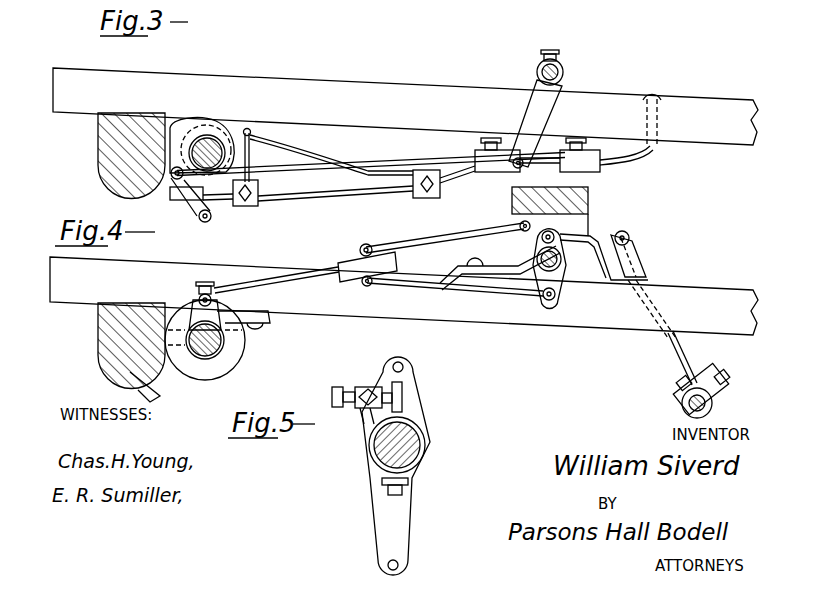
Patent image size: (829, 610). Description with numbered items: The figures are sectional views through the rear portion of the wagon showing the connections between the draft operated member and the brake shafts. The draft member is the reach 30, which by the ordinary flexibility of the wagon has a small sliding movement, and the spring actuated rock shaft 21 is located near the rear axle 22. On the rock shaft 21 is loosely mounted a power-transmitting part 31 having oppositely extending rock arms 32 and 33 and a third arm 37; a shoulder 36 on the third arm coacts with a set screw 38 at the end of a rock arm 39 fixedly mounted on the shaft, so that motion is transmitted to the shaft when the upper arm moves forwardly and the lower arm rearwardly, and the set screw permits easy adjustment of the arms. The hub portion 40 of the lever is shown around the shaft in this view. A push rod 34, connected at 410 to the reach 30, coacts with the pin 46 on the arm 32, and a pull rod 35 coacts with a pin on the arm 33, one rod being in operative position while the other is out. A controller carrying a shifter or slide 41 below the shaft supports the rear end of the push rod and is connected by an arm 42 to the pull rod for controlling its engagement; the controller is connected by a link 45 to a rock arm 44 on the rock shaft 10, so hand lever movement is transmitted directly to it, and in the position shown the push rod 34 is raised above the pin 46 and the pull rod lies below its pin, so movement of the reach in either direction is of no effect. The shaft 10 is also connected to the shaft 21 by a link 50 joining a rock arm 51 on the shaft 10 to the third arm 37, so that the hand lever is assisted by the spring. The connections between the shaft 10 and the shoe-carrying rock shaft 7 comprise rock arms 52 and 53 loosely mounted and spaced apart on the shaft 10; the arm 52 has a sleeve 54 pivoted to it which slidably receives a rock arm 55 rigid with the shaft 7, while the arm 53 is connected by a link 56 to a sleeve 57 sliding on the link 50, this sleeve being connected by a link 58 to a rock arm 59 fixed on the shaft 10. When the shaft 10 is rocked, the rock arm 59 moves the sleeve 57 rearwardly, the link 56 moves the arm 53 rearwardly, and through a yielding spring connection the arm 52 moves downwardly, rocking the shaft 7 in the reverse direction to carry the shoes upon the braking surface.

In FIG. 4, the rock shaft 7 is at (716, 406).
In FIG. 3, the rock shaft 10 is at (563, 68).
In FIG. 4, the rock shaft 10 is at (556, 272).
In FIG. 3, the rock shaft 21 is at (222, 145).
In FIG. 4, the rock shaft 21 is at (224, 348).
In FIG. 5, the rock shaft 21 is at (420, 440).
In FIG. 3, the rear axle 22 is at (98, 144).
In FIG. 4, the rear axle 22 is at (98, 351).
In FIG. 3, the reach 30 is at (428, 97).
In FIG. 4, the reach 30 is at (236, 270).
In FIG. 4, the power-transmitting part 31 is at (213, 372).
In FIG. 5, the power-transmitting part 31 is at (415, 484).
In FIG. 3, the rock arm 32 is at (182, 204).
In FIG. 5, the rock arm 32 is at (400, 538).
In FIG. 3, the rock arm 33 is at (208, 120).
In FIG. 3, the push rod 34 is at (292, 201).
In FIG. 3, the pull rod 35 is at (258, 143).
In FIG. 5, the shoulder 36 is at (402, 393).
In FIG. 4, the third arm 37 is at (203, 312).
In FIG. 5, the third arm 37 is at (415, 390).
In FIG. 5, the set screw 38 is at (380, 386).
In FIG. 5, the rock arm 39 is at (364, 414).
In FIG. 3, the lever bar 40 is at (236, 156).
In FIG. 3, the shifter or slide 41 is at (245, 206).
In FIG. 3, the arm 42 is at (252, 137).
In FIG. 3, the rock arm 44 is at (547, 110).
In FIG. 3, the link 45 is at (434, 170).
In FIG. 3, the pin 46 is at (205, 222).
In FIG. 4, the link 50 is at (284, 290).
In FIG. 4, the rock arm 51 is at (562, 236).
In FIG. 4, the rock arm 52 is at (620, 232).
In FIG. 4, the rock arm 53 is at (515, 224).
In FIG. 4, the sleeve 54 is at (636, 262).
In FIG. 4, the rock arm 55 is at (698, 352).
In FIG. 4, the link 56 is at (434, 243).
In FIG. 4, the sleeve 57 is at (355, 258).
In FIG. 4, the link 58 is at (416, 286).
In FIG. 4, the rock arm 59 is at (544, 297).
In FIG. 3, the connection 410 is at (650, 148).